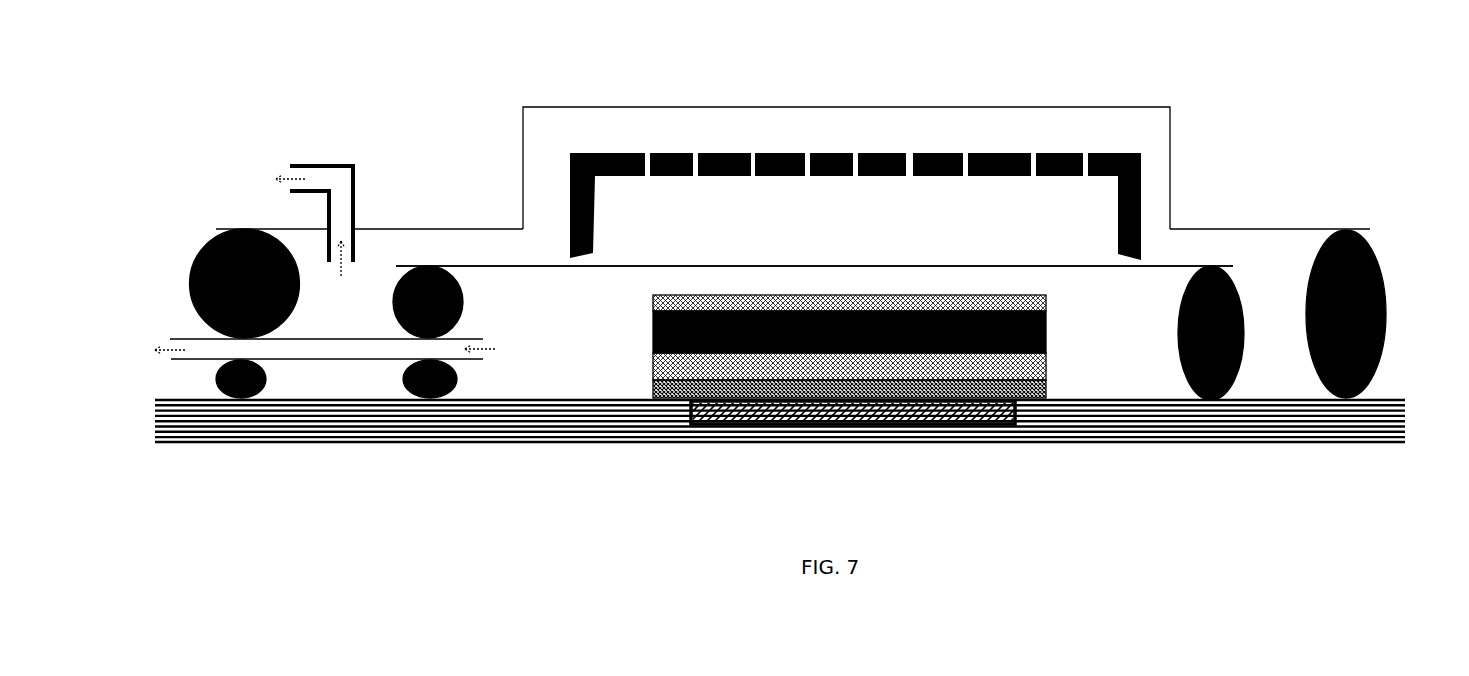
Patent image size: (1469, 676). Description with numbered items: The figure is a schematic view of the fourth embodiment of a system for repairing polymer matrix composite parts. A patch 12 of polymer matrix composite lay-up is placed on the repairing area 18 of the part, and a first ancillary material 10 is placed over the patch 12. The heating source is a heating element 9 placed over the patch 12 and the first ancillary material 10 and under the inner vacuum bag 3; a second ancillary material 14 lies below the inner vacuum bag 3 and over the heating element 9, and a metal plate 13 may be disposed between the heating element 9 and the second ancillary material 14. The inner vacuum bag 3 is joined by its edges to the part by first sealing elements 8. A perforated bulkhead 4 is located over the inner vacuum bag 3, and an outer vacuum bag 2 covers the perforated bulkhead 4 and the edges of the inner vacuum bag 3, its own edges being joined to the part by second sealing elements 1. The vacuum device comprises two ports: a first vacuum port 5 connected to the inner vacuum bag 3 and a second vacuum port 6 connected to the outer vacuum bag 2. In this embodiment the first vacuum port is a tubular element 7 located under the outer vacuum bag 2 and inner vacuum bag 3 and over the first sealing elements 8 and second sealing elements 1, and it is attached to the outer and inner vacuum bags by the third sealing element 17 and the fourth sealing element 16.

The second sealing elements 1 is at (208, 380).
The outer vacuum bag 2 is at (745, 98).
The inner vacuum bag 3 is at (1140, 258).
The perforated bulkhead 4 is at (985, 143).
The first vacuum port 5 is at (780, 421).
The second vacuum port 6 is at (290, 157).
The tubular element 7 is at (470, 352).
The first sealing elements 8 is at (398, 382).
The heating element 9 is at (645, 358).
The first ancillary material 10 is at (1042, 380).
The patch 12 is at (797, 428).
The metal plate 13 is at (645, 328).
The second ancillary material 14 is at (1040, 297).
The fourth sealing element 16 is at (208, 221).
The third sealing element 17 is at (427, 257).
The repairing area 18 is at (683, 418).